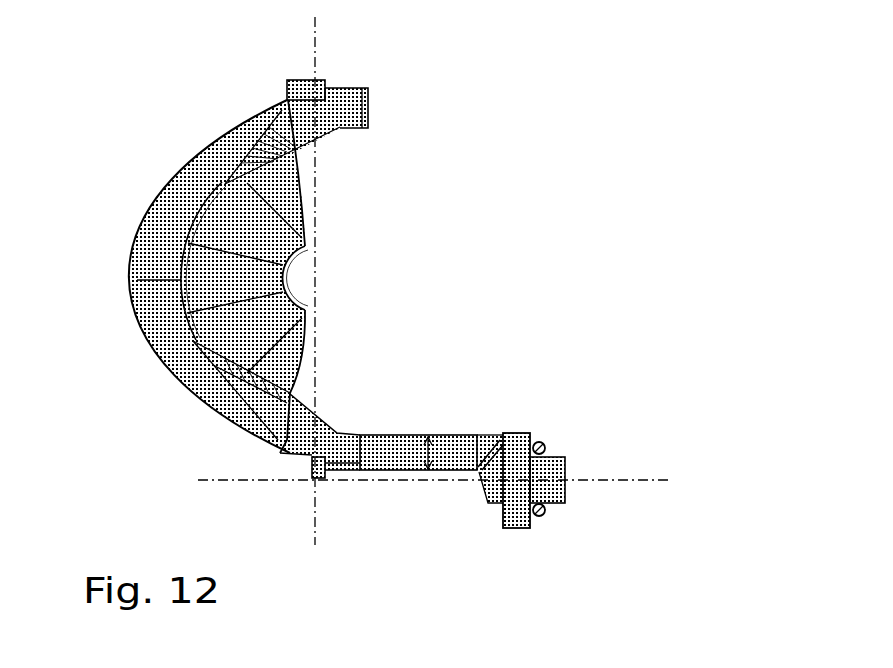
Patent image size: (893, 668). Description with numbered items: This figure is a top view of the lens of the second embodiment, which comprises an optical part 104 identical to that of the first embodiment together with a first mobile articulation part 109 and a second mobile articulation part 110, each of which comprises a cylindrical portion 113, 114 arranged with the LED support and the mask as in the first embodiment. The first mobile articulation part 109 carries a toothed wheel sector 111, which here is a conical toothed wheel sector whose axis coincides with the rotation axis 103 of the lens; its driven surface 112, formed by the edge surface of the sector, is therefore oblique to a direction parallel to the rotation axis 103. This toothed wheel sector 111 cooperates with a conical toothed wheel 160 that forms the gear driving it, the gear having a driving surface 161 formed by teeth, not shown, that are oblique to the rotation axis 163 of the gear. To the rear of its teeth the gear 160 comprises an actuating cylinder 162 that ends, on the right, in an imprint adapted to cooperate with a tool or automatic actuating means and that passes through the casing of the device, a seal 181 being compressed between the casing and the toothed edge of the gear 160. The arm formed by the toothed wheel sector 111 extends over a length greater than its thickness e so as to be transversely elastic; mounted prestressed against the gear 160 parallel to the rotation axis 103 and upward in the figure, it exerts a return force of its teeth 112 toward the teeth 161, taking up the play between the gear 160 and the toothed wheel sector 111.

The rotation axis 103 is at (317, 47).
The optical part 104 is at (148, 237).
The first mobile articulation part 109 is at (331, 398).
The second mobile articulation part 110 is at (342, 143).
The toothed wheel sector 111 is at (400, 468).
The driven surface 112 is at (483, 453).
The cylindrical portion 113 is at (311, 478).
The cylindrical portion 114 is at (288, 92).
The conical toothed wheel 160 is at (548, 403).
The driving surface 161 is at (493, 497).
The actuating cylinder 162 is at (550, 470).
The rotation axis of the gear 163 is at (630, 480).
The seal 181 is at (540, 515).
The thickness e is at (430, 451).